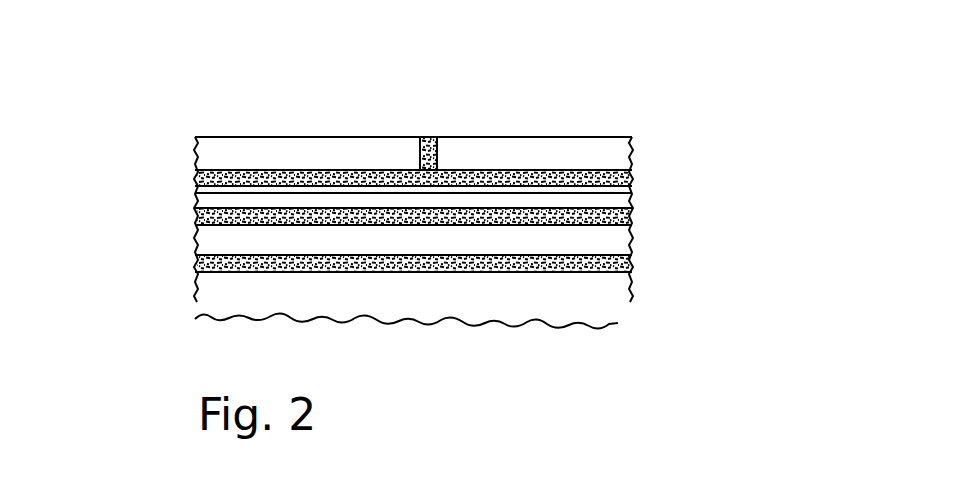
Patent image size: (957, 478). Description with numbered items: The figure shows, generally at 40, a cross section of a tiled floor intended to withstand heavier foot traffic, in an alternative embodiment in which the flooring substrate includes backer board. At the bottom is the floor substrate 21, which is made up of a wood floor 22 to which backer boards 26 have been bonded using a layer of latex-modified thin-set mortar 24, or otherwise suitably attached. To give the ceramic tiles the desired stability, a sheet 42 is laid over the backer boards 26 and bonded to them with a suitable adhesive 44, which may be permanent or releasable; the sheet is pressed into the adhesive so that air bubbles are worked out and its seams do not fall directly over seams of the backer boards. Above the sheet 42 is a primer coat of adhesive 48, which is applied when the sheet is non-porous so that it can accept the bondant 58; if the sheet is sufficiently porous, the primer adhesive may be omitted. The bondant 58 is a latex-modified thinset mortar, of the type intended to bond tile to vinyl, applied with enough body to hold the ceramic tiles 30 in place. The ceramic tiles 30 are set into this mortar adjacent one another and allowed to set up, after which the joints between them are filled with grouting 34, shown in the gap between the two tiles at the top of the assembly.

The tiled floor 40 is at (636, 82).
The bondant 58 is at (632, 182).
The primer adhesive 48 is at (632, 191).
The sheet 42 is at (632, 206).
The adhesive 44 is at (632, 243).
The grouting 34 is at (430, 137).
The ceramic tiles 30 is at (347, 166).
The backer boards 26 is at (459, 257).
The wood floor 22 is at (464, 310).
The floor substrate 21 is at (420, 241).
The latex-modified thin-set mortar 24 is at (190, 259).